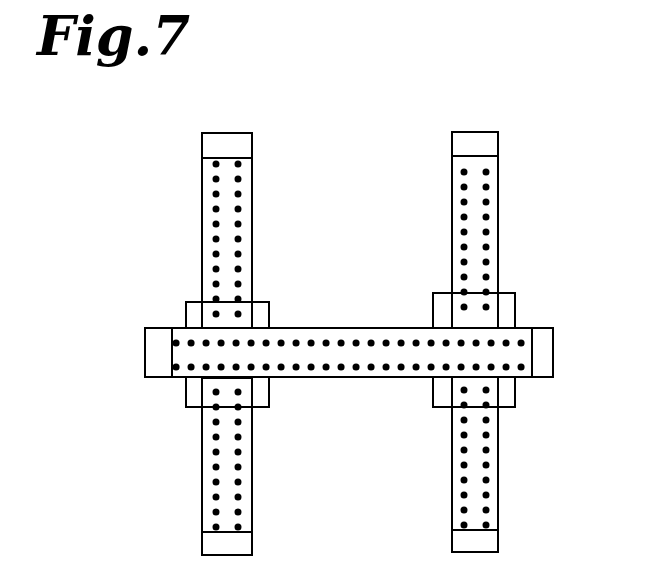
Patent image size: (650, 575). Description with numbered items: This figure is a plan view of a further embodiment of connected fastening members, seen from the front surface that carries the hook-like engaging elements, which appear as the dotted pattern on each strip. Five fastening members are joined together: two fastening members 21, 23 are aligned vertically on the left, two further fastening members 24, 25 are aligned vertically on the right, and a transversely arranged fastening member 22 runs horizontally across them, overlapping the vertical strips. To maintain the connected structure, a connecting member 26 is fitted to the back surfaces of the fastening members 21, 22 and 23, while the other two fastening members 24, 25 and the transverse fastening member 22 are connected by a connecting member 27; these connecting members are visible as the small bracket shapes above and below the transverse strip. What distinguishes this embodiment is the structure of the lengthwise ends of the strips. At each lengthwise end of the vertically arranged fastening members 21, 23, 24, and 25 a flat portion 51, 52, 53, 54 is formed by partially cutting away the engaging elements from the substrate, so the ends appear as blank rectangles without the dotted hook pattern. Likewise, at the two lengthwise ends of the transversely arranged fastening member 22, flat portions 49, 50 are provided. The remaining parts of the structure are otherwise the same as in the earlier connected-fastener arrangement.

The fastening member 21 is at (202, 226).
The fastening member 22 is at (360, 329).
The fastening member 23 is at (202, 512).
The fastening member 24 is at (498, 225).
The fastening member 25 is at (498, 498).
The connecting member 26 is at (192, 392).
The connecting member 27 is at (508, 387).
The flat portion 49 is at (157, 350).
The flat portion 50 is at (547, 348).
The flat portion 51 is at (240, 147).
The flat portion 52 is at (240, 544).
The flat portion 53 is at (488, 540).
The flat portion 54 is at (488, 150).